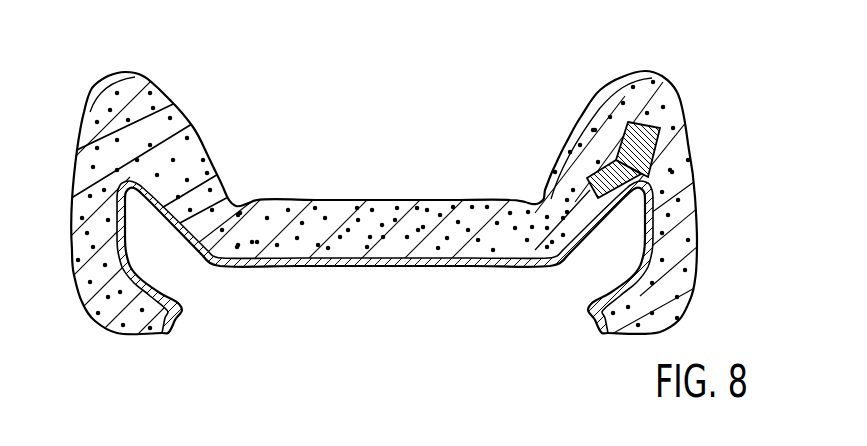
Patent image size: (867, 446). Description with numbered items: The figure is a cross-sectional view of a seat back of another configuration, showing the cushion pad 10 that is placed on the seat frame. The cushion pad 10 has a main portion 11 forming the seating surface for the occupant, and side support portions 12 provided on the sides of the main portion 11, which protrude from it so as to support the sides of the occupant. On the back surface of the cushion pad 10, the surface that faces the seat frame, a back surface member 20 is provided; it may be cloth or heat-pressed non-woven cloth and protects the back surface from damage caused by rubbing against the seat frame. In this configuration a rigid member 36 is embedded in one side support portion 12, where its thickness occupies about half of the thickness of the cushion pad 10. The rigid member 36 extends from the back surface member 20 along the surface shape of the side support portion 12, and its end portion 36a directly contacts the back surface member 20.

The cushion pad 10 is at (418, 238).
The main portion 11 is at (525, 180).
The side support portions 12 is at (252, 182).
The back surface member 20 is at (310, 268).
The rigid member 36 is at (675, 140).
The end portion 36a is at (628, 186).